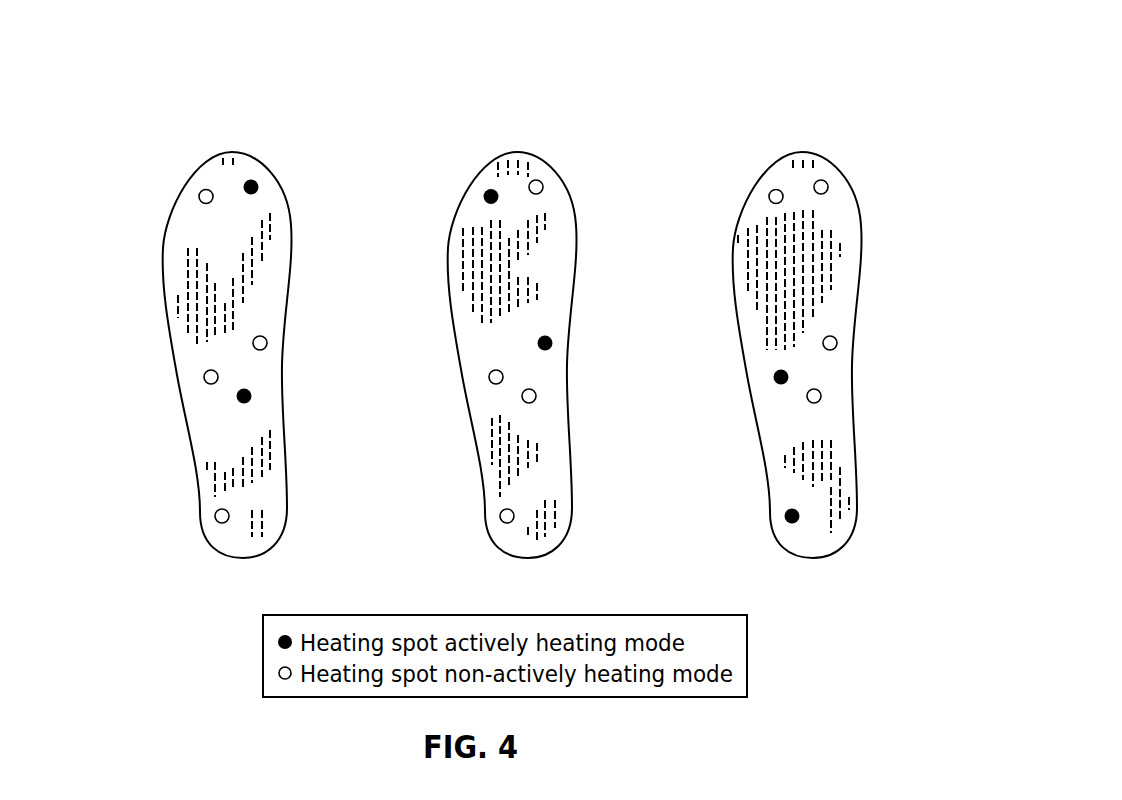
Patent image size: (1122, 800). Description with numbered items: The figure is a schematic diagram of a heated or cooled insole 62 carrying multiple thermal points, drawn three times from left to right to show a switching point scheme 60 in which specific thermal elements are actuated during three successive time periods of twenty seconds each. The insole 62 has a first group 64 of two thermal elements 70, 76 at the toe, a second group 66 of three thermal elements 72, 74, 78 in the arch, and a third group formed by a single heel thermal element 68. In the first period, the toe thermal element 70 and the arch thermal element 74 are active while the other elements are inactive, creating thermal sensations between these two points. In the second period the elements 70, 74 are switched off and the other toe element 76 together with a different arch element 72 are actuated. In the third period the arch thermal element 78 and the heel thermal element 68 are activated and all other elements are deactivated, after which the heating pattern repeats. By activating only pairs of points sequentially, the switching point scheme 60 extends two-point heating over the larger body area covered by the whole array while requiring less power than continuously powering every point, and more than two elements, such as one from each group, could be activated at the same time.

The switching point scheme 60 is at (168, 58).
The insole 62 is at (177, 265).
The first group 64 is at (160, 195).
The second group 66 is at (285, 386).
The heel thermal element 68 is at (203, 529).
The toe thermal element 70 is at (257, 184).
The arch thermal element 72 is at (266, 340).
The arch thermal element 74 is at (250, 401).
The toe thermal element 76 is at (485, 199).
The arch thermal element 78 is at (205, 379).